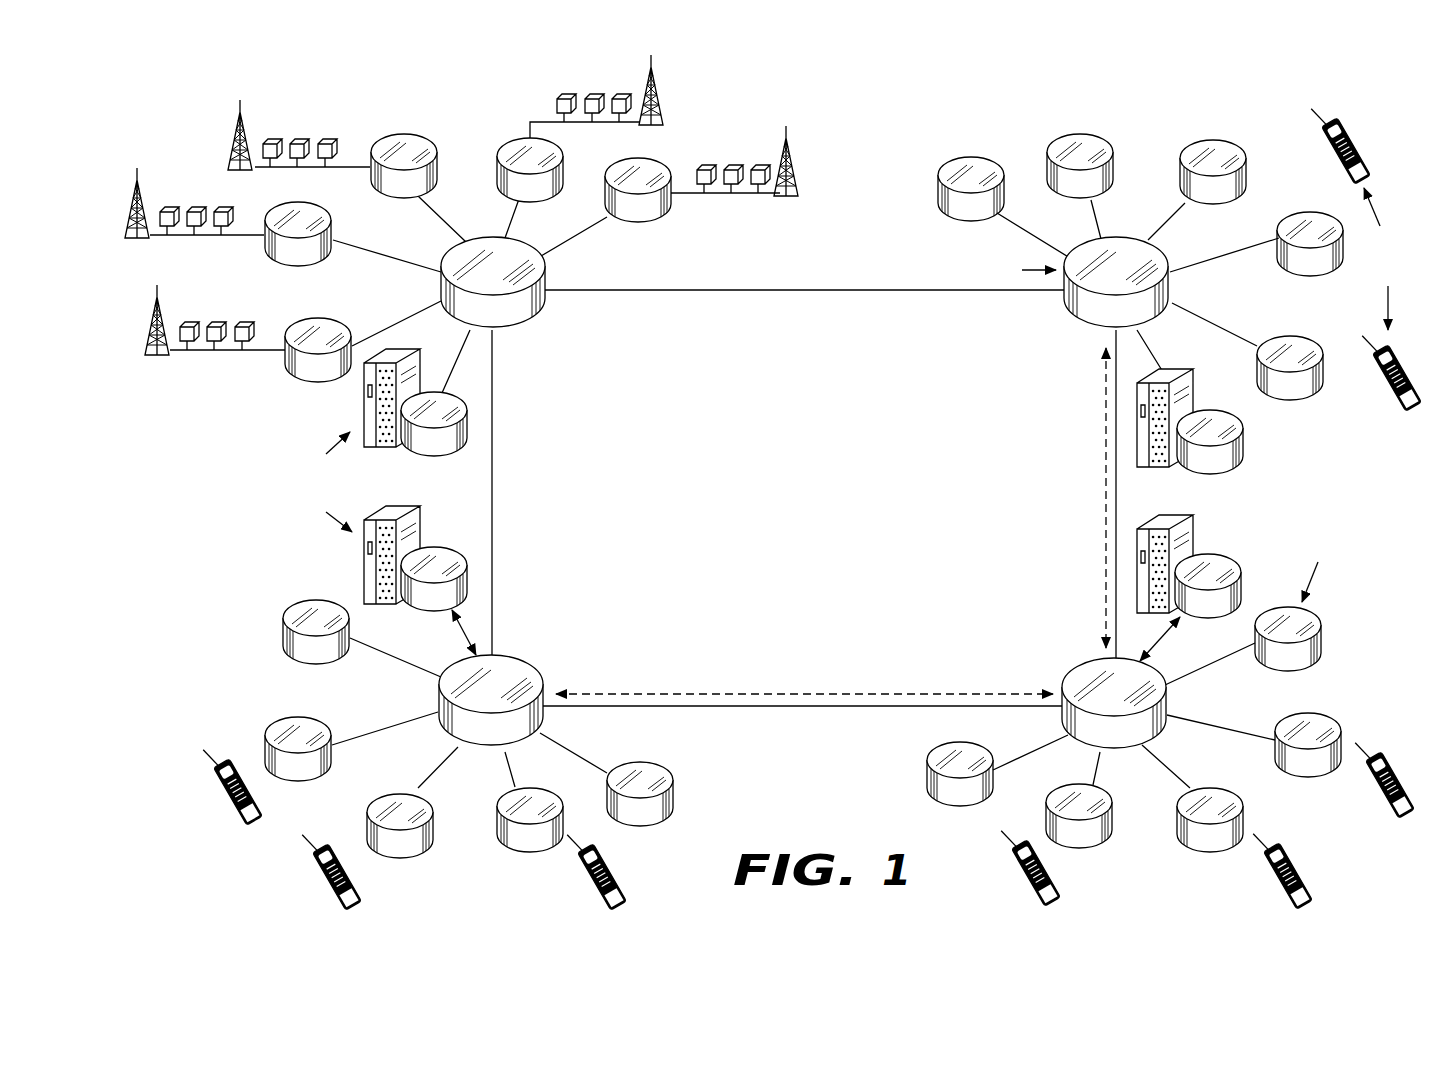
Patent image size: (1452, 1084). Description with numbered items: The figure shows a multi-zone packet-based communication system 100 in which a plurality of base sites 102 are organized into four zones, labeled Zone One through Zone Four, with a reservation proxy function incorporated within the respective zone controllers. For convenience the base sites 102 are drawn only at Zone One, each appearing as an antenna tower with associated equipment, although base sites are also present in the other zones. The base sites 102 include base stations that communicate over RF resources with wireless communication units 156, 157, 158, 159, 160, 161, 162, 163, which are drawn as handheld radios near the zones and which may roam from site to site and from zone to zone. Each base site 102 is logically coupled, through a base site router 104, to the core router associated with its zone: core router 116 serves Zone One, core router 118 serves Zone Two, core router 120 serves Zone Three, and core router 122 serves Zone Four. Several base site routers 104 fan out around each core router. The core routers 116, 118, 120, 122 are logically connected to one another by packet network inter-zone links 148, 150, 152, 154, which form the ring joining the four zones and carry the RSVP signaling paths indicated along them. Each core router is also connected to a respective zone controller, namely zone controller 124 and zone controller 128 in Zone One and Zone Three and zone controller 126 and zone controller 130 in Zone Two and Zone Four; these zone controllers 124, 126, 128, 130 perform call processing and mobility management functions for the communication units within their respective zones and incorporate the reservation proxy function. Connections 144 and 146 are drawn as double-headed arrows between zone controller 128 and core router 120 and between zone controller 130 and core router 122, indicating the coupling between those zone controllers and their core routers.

The packet-based communication system 100 is at (786, 482).
The base sites 102 is at (183, 236).
The base site routers 104 is at (404, 134).
The core router 116 is at (545, 275).
The core router 118 is at (1128, 240).
The core router 120 is at (472, 752).
The core router 122 is at (1168, 707).
The zone controller 124 is at (374, 448).
The zone controller 126 is at (1192, 390).
The zone controller 128 is at (418, 514).
The zone controller 130 is at (1194, 532).
The link between zone controller and core router 144 is at (470, 636).
The link between zone controller and core router 146 is at (1160, 640).
The inter-zone link 148 is at (806, 290).
The inter-zone link 150 is at (1117, 492).
The inter-zone link 152 is at (806, 709).
The inter-zone link 154 is at (493, 498).
The communication unit 156 is at (1362, 163).
The communication unit 157 is at (1412, 395).
The communication unit 158 is at (220, 800).
The communication unit 159 is at (356, 898).
The communication unit 160 is at (621, 895).
The communication unit 161 is at (1050, 892).
The communication unit 162 is at (1303, 895).
The communication unit 163 is at (1402, 803).